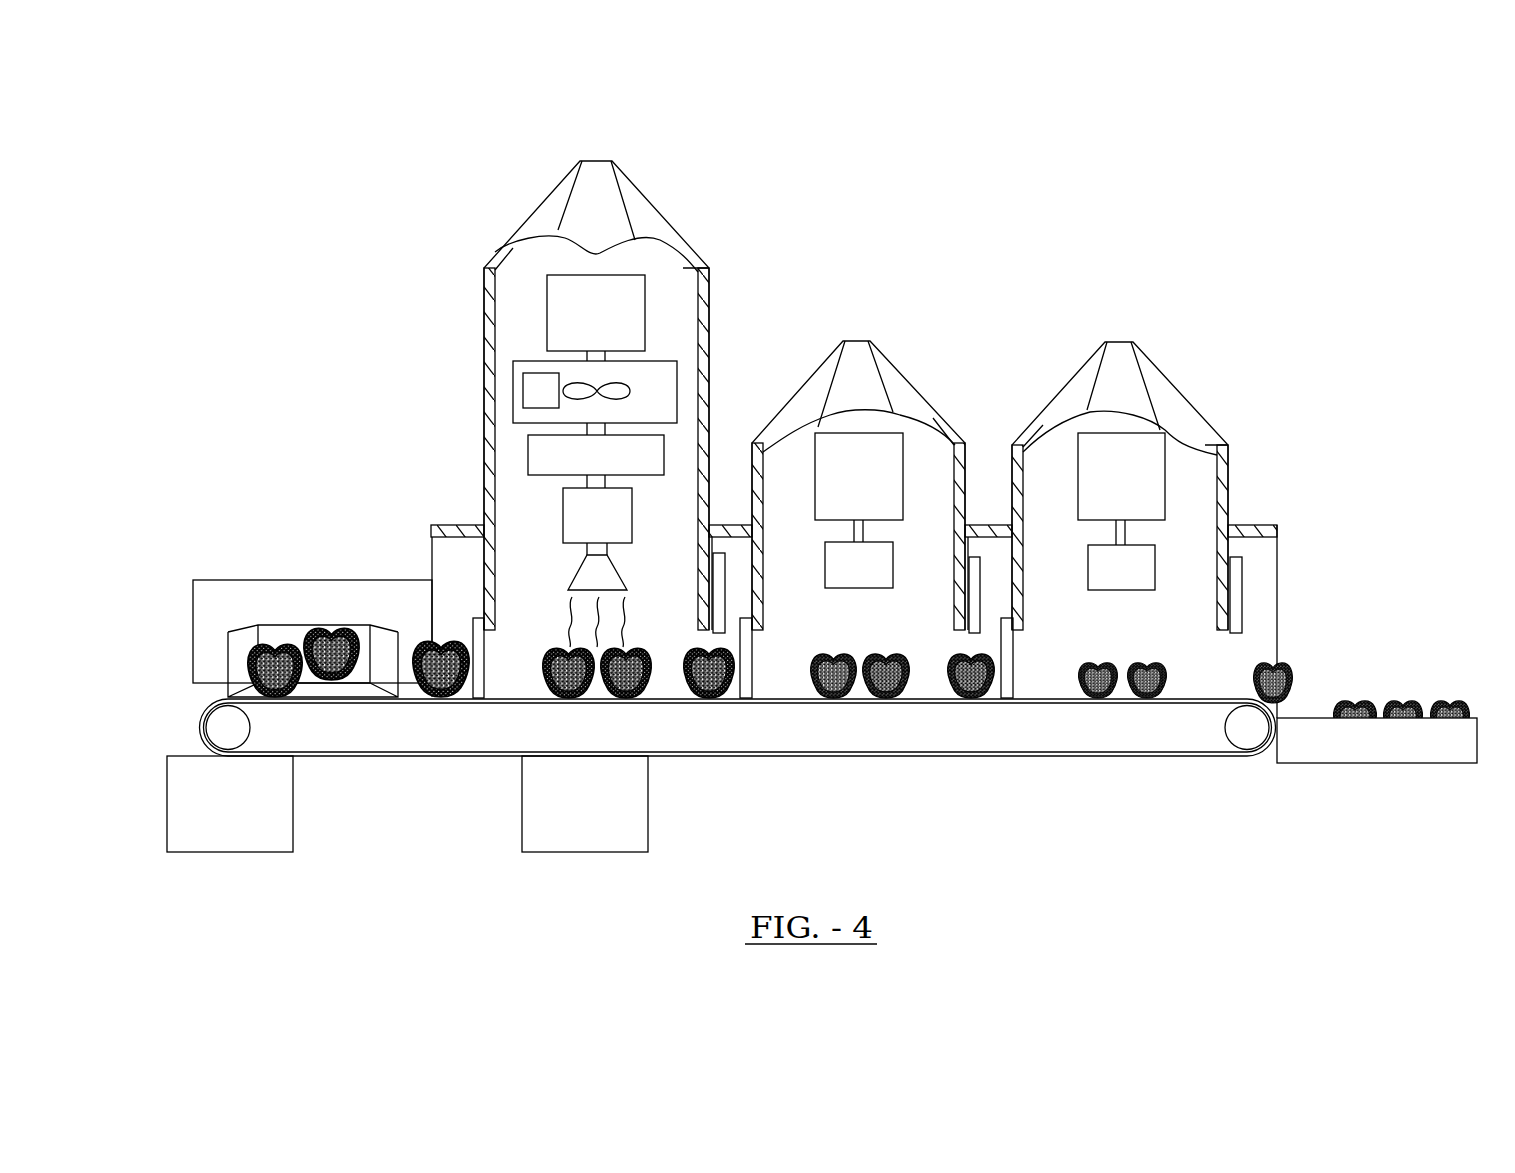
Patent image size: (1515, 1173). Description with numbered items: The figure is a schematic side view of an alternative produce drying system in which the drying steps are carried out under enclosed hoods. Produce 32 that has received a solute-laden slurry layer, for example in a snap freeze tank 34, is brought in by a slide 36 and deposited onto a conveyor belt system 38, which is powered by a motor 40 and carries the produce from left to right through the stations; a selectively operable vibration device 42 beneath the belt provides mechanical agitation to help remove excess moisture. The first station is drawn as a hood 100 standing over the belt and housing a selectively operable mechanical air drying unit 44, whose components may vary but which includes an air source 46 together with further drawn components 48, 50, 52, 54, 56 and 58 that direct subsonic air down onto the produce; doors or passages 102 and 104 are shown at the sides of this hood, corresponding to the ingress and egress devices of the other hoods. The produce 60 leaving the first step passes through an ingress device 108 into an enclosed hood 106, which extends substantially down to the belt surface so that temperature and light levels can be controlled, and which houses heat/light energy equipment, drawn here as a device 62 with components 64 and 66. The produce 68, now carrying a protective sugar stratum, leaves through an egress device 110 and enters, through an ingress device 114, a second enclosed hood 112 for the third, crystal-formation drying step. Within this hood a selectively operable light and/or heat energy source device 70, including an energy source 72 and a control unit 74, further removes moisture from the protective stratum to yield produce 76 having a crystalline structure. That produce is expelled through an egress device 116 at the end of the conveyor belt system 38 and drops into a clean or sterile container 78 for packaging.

The produce 32 is at (428, 647).
The snap freeze tank 34 is at (205, 580).
The slide 36 is at (227, 643).
The conveyor belt system 38 is at (223, 722).
The motor 40 is at (218, 852).
The vibration device 42 is at (522, 852).
The mechanical air drying unit 44 is at (524, 330).
The air source 46 is at (645, 295).
The blower housing 48 is at (660, 361).
The heater 50 is at (542, 393).
The fan 52 is at (630, 390).
The filter 54 is at (530, 475).
The pump 56 is at (633, 518).
The nozzle 58 is at (622, 575).
The produce 60 is at (548, 652).
The second treatment station 62 is at (916, 488).
The heater 64 is at (823, 554).
The air supply 66 is at (814, 468).
The produce having a protective stratum 68 is at (955, 655).
The light and/or heat energy source device 70 is at (1060, 454).
The energy source 72 is at (1088, 560).
The control unit 74 is at (1167, 488).
The produce having a crystalline structure 76 is at (1150, 660).
The containers 78 is at (1360, 765).
The first housing 100 is at (659, 212).
The first gate 102 is at (485, 674).
The intermediate gate 104 is at (720, 568).
The hood 106 is at (908, 374).
The ingress device 108 is at (755, 673).
The egress device 110 is at (975, 575).
The hood 112 is at (1177, 388).
The ingress device 114 is at (1010, 672).
The egress device 116 is at (1245, 580).